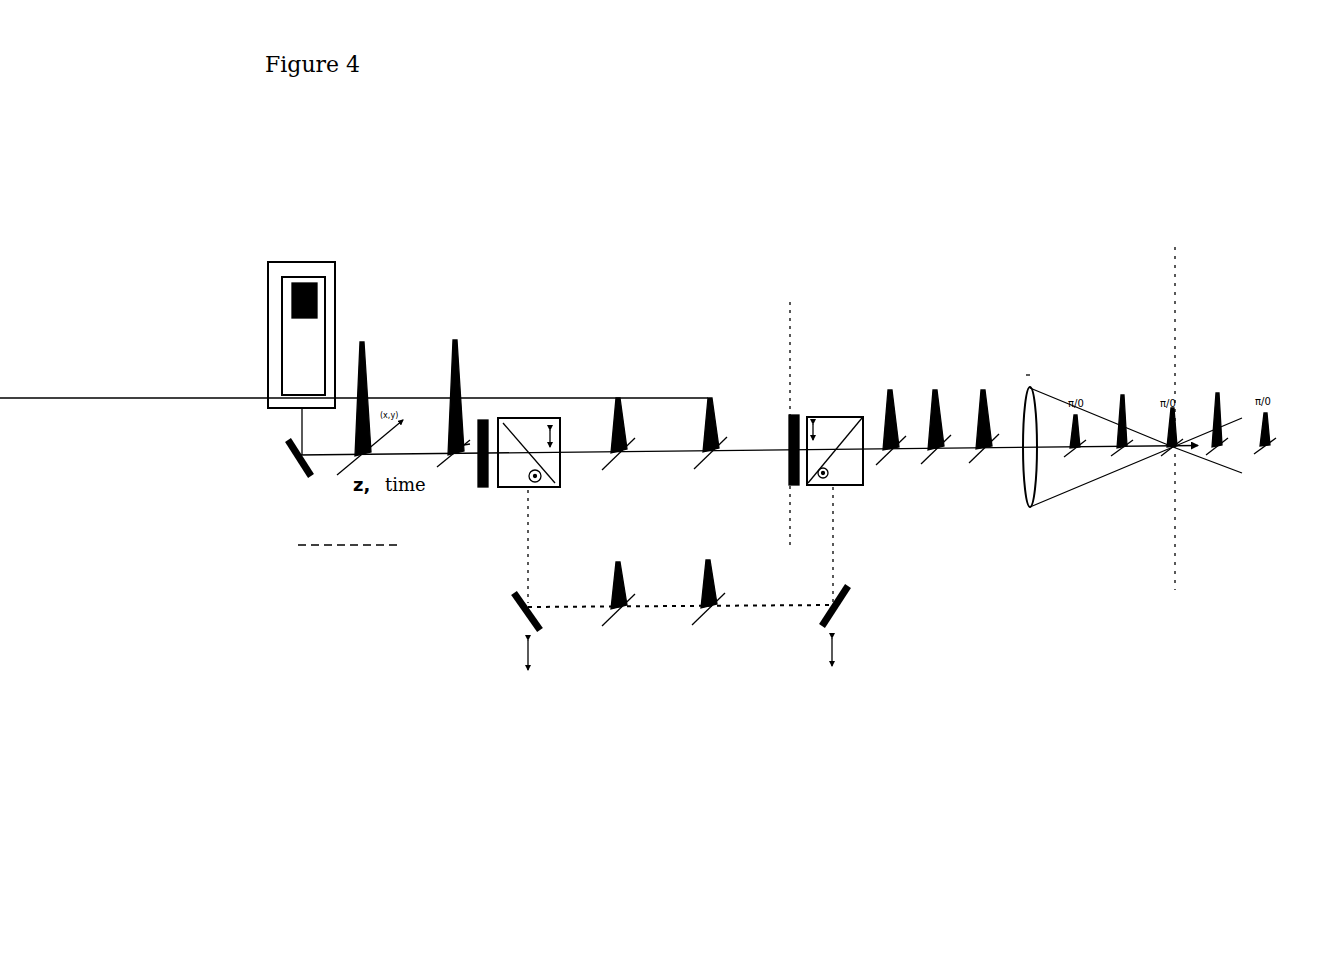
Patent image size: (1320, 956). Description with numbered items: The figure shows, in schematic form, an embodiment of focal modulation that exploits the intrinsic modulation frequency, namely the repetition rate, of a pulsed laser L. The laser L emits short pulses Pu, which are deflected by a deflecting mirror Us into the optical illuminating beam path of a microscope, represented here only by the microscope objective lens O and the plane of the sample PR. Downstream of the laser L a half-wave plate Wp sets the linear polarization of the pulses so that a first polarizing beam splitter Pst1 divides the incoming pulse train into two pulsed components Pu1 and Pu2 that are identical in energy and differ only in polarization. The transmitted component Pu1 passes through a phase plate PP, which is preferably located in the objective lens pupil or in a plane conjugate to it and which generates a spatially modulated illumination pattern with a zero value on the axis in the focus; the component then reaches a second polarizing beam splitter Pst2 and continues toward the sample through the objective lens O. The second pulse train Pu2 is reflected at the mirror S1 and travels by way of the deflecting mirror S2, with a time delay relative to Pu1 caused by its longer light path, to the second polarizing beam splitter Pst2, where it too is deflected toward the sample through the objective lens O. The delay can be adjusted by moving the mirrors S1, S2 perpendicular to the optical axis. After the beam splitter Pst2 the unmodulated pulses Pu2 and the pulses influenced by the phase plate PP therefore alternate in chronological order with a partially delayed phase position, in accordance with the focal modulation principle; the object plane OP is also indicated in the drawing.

The pulsed laser L is at (266, 287).
The deflecting mirror Us is at (277, 459).
The short pulses Pu is at (459, 380).
The lambda/2 plate Wp is at (361, 487).
The first polarizing beam splitter Pst1 is at (529, 496).
The first pulsed component Pu1 is at (363, 417).
The second pulse train Pu2 is at (663, 581).
The phase plate PP is at (693, 387).
The object plane OP is at (799, 400).
The second polarizing beam splitter Pst2 is at (835, 497).
The microscope objective lens O is at (1077, 423).
The plane of the sample PR is at (1162, 435).
The mirror S1 is at (511, 631).
The deflecting mirror S2 is at (861, 626).